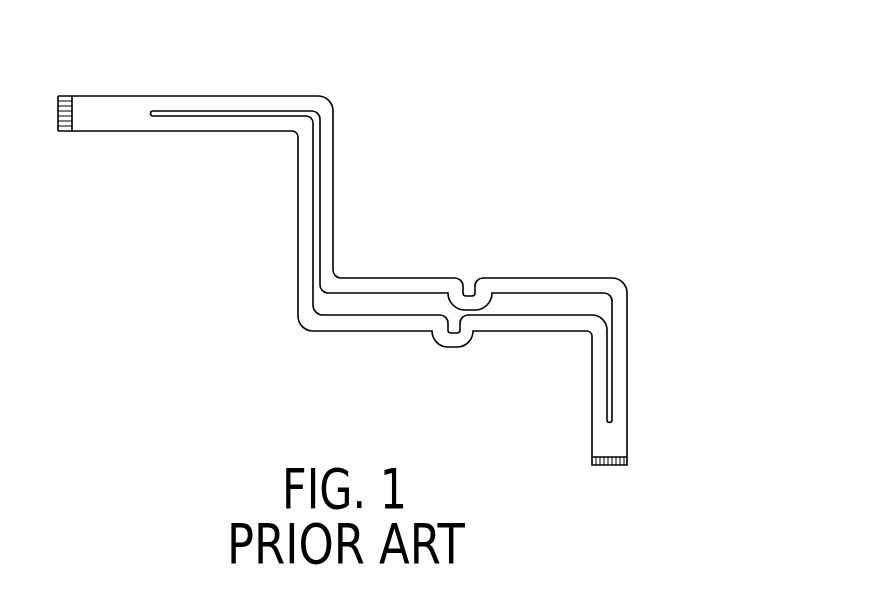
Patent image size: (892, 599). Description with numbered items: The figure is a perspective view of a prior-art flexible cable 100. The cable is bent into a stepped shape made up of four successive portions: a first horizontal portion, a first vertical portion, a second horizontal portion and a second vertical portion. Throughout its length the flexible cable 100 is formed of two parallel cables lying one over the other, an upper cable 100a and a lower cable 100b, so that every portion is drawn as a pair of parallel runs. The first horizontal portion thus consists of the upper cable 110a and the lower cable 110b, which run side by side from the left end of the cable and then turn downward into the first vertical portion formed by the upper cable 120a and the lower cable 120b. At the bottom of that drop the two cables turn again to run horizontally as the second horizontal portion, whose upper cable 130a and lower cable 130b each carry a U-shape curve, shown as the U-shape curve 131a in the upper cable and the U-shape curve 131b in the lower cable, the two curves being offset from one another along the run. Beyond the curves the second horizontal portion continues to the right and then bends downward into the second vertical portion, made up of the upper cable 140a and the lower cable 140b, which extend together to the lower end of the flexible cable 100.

The flexible cable 100 is at (354, 130).
The upper cable 100a is at (337, 98).
The lower cable 100b is at (291, 139).
The upper cable of first horizontal portion 110a is at (207, 105).
The lower cable of first horizontal portion 110b is at (177, 124).
The upper cable of first vertical portion 120a is at (330, 217).
The lower cable of first vertical portion 120b is at (305, 267).
The upper cable of second horizontal portion 130a is at (568, 278).
The lower cable of second horizontal portion 130b is at (528, 322).
The U-shape curve of upper cable 131a is at (463, 287).
The U-shape curve of lower cable 131b is at (443, 338).
The upper cable of second vertical portion 140a is at (620, 347).
The lower cable of second vertical portion 140b is at (600, 404).